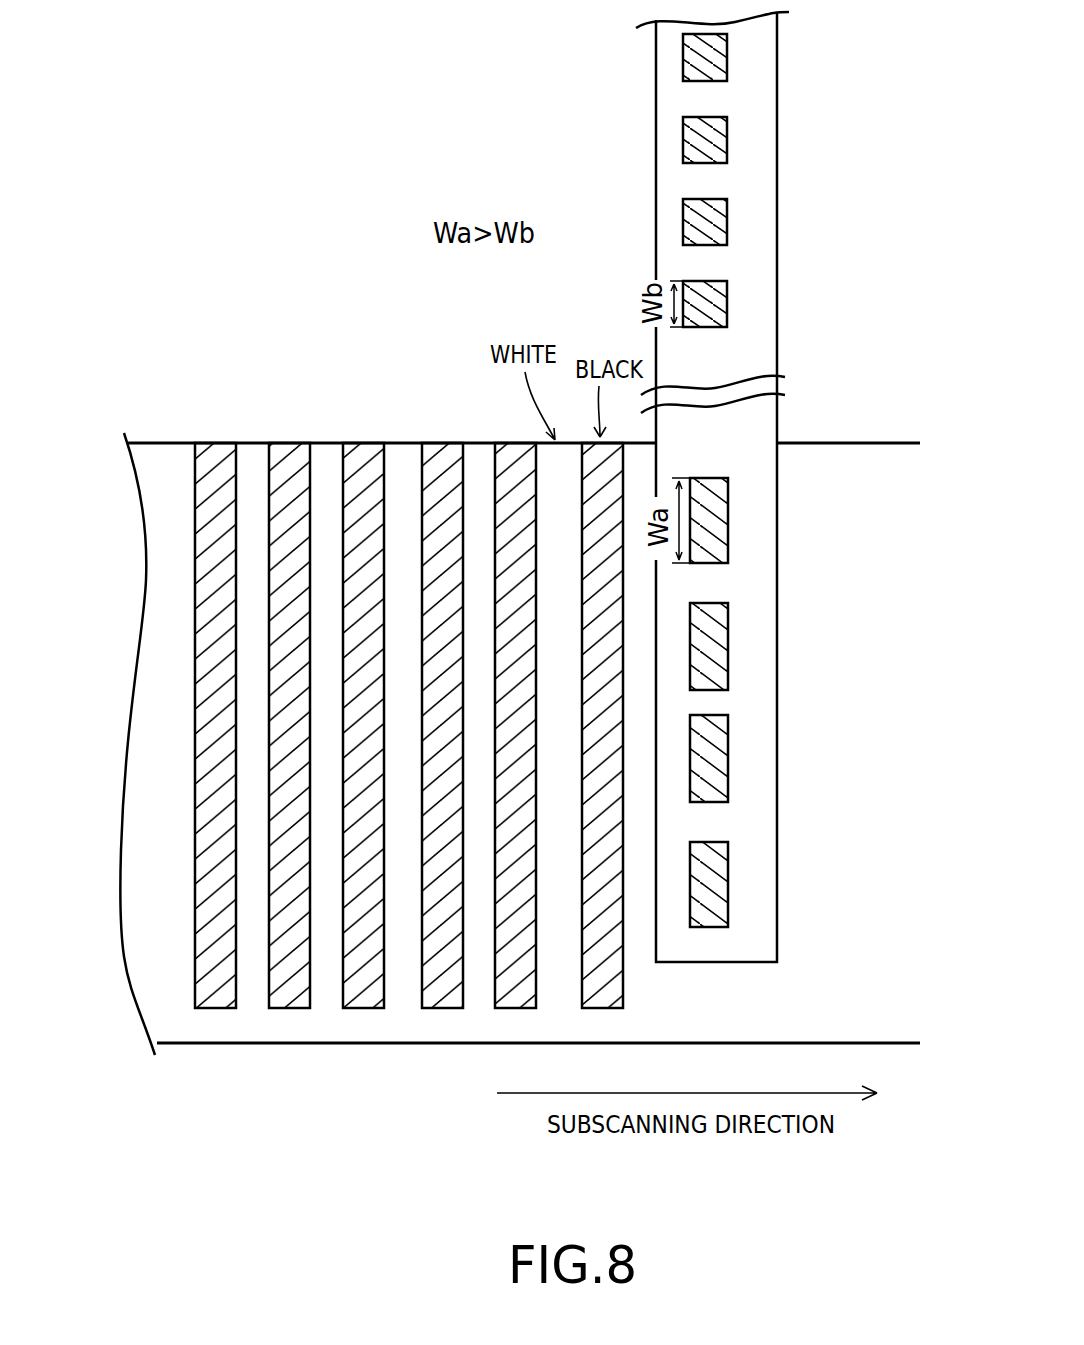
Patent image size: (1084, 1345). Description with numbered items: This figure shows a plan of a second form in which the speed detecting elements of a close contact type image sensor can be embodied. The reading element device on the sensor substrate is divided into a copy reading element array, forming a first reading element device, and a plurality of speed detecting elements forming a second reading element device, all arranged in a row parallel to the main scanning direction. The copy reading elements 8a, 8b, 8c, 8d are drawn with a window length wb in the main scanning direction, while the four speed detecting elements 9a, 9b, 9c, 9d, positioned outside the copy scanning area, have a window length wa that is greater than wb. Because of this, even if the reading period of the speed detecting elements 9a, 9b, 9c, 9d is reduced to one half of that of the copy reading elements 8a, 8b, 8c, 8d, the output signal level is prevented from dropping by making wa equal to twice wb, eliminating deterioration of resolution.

The copy reading element 8a is at (727, 305).
The copy reading element 8b is at (727, 224).
The copy reading element 8c is at (727, 140).
The copy reading element 8d is at (727, 65).
The speed detecting element 9a is at (728, 900).
The speed detecting element 9b is at (728, 763).
The speed detecting element 9c is at (728, 648).
The speed detecting element 9d is at (728, 532).